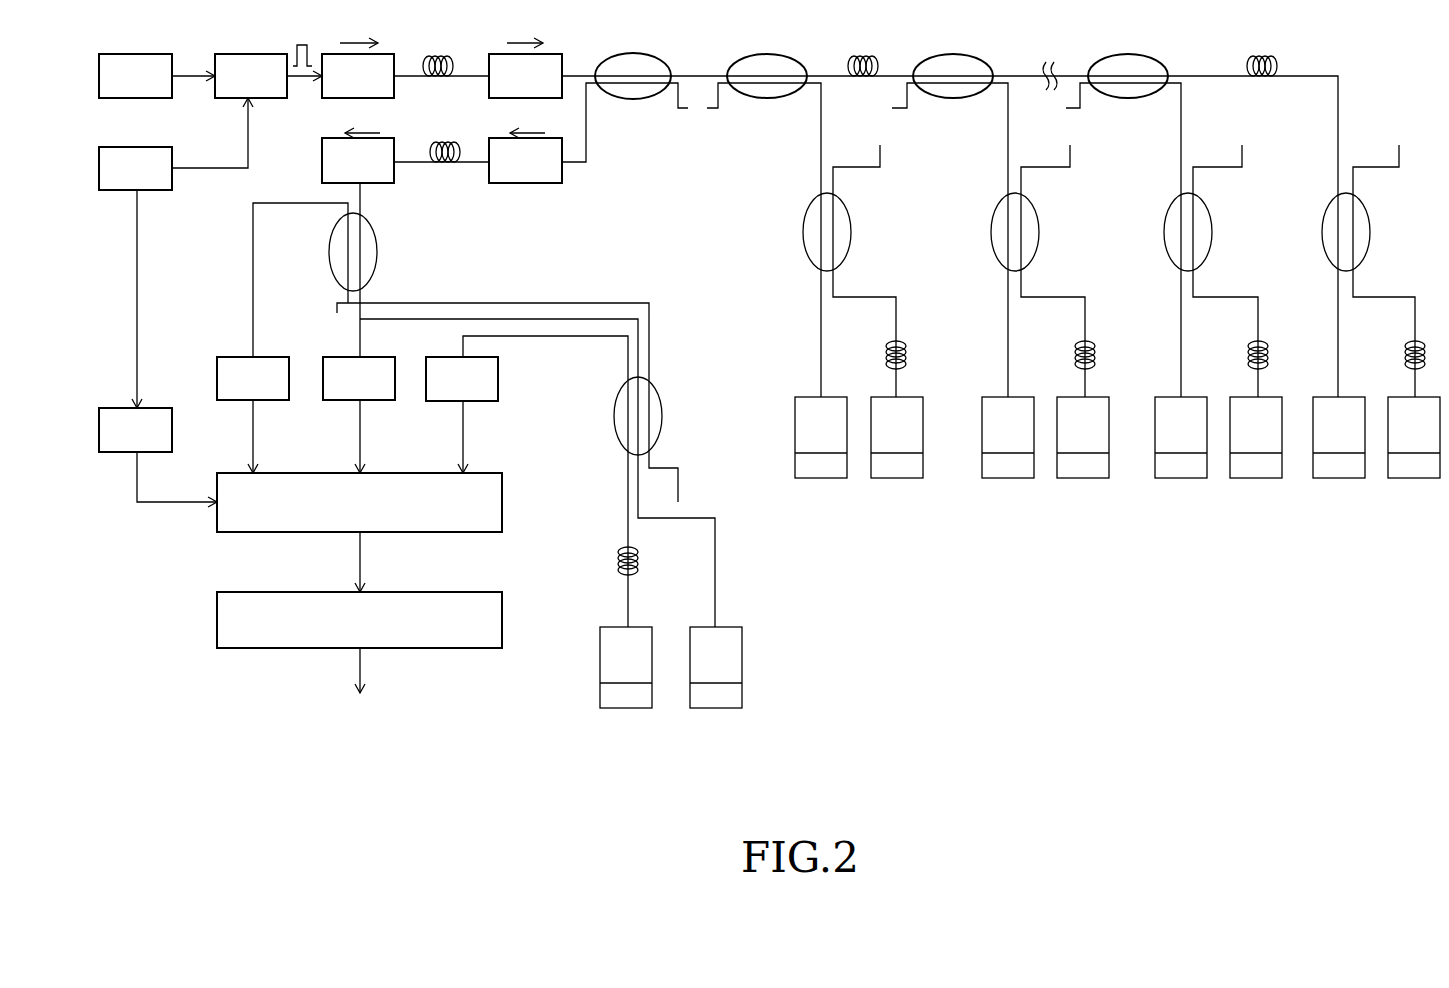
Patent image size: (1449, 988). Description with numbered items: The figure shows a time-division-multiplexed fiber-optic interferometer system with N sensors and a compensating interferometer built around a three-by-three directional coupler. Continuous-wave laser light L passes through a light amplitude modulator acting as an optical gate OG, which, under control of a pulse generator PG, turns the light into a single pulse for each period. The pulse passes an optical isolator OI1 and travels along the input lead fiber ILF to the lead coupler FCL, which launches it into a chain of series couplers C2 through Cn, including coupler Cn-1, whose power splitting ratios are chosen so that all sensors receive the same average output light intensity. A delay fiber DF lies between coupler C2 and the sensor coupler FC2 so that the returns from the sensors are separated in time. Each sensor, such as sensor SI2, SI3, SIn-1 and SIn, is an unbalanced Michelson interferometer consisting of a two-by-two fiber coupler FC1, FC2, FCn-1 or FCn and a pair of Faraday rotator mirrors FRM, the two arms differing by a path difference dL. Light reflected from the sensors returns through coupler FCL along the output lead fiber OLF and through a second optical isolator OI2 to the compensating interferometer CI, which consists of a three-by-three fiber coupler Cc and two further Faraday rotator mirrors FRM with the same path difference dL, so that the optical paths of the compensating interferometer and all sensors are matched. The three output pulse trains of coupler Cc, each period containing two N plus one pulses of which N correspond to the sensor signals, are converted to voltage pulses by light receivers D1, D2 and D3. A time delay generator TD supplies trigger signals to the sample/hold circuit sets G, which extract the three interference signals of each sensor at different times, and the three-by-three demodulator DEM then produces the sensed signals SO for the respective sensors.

The laser light L is at (135, 76).
The optical gate OG is at (251, 76).
The pulse generator PG is at (135, 168).
The time delay generator TD is at (135, 430).
The sample/hold circuit sets G is at (359, 502).
The 3×3 demodulator DEM is at (359, 620).
The sensed signals SO is at (360, 715).
The light receiver D1 is at (253, 378).
The light receiver D2 is at (359, 378).
The light receiver D3 is at (462, 379).
The optical isolator OI1 is at (442, 110).
The optical isolator OI2 is at (358, 155).
The input lead fiber ILF is at (441, 54).
The output lead fiber OLF is at (441, 140).
The lead fiber coupler FCL is at (633, 65).
The series coupler Cn is at (764, 214).
The delay fiber DF is at (1062, 53).
The series coupler Cn-1 is at (950, 214).
The series coupler C2 is at (1123, 214).
The 2×2 fiber coupler FC1 is at (849, 271).
The 2×2 fiber coupler FC2 is at (1038, 271).
The 2×2 fiber coupler FCn-1 is at (1211, 271).
The 2×2 fiber coupler FCn is at (1368, 271).
The optical path difference dL is at (1011, 446).
The Faraday rotator mirror FRM is at (1020, 566).
The sensor SI3 is at (873, 544).
The sensor SI2 is at (1062, 544).
The sensor SIn-1 is at (1245, 544).
The sensor SIn is at (1395, 544).
The 3×3 fiber coupler Cc is at (649, 416).
The compensating interferometer CI is at (672, 773).